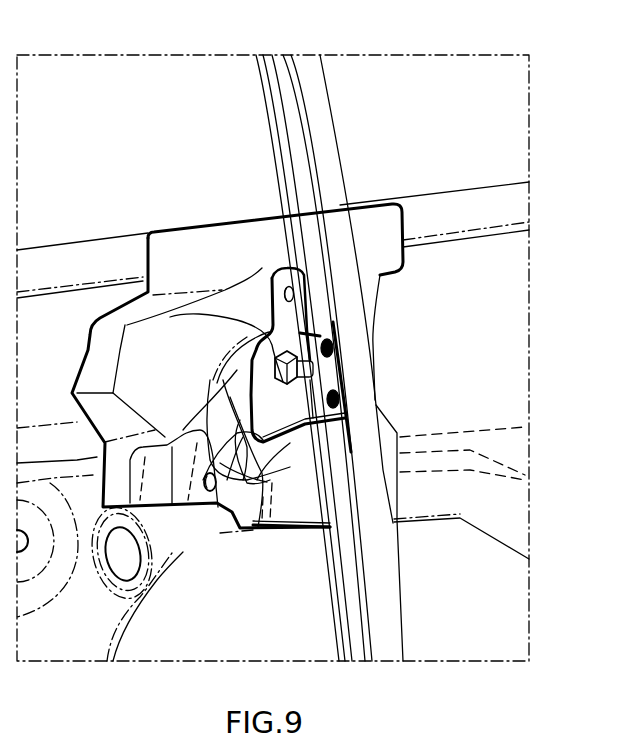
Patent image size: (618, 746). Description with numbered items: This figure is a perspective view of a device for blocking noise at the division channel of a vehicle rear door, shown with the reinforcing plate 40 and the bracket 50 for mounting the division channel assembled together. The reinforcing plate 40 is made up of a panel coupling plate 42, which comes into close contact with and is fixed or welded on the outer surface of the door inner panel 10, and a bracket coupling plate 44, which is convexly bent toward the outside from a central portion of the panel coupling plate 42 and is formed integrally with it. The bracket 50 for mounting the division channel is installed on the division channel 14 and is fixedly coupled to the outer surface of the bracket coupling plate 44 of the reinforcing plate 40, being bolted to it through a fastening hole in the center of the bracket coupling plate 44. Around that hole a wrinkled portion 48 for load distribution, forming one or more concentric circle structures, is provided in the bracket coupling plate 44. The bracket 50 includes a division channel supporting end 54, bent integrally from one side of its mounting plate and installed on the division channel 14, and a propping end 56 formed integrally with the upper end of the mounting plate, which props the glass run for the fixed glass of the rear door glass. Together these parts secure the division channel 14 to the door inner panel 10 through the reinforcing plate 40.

The door inner panel 10 is at (483, 297).
The division channel 14 is at (316, 100).
The reinforcing plate 40 is at (146, 231).
The panel coupling plate 42 is at (190, 248).
The bracket coupling plate 44 is at (317, 447).
The wrinkled portion 48 is at (211, 493).
The bracket for mounting the division channel 50 is at (295, 436).
The division channel supporting end 54 is at (313, 370).
The propping end 56 is at (283, 262).